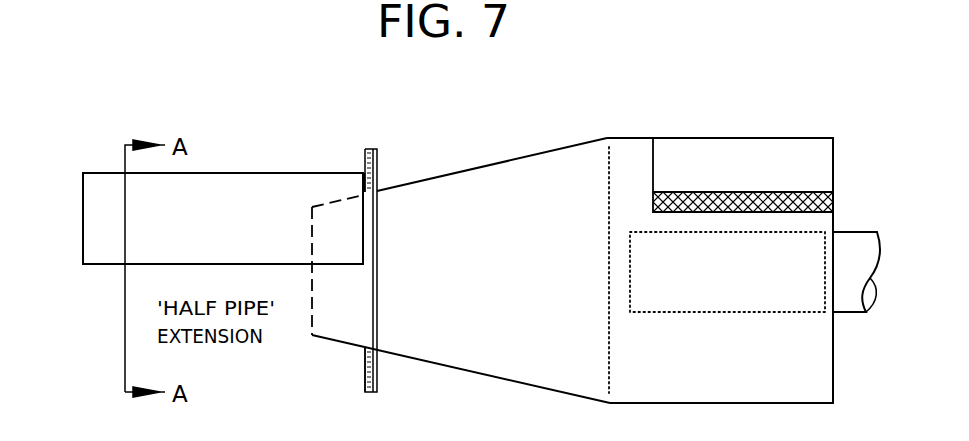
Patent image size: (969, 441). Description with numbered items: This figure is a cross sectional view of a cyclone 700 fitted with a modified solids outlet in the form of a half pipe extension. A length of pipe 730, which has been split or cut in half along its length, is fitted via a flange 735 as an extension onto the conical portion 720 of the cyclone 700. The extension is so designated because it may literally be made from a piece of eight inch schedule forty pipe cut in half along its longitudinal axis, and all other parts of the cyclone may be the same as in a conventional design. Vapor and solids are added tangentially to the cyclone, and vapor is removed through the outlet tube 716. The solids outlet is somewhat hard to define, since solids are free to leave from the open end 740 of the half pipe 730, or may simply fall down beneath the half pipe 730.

The cyclone 700 is at (638, 137).
The outlet tube 716 is at (845, 232).
The conical portion 720 is at (423, 180).
The half pipe extension 730 is at (247, 173).
The flange 735 is at (366, 151).
The open end 740 is at (82, 255).